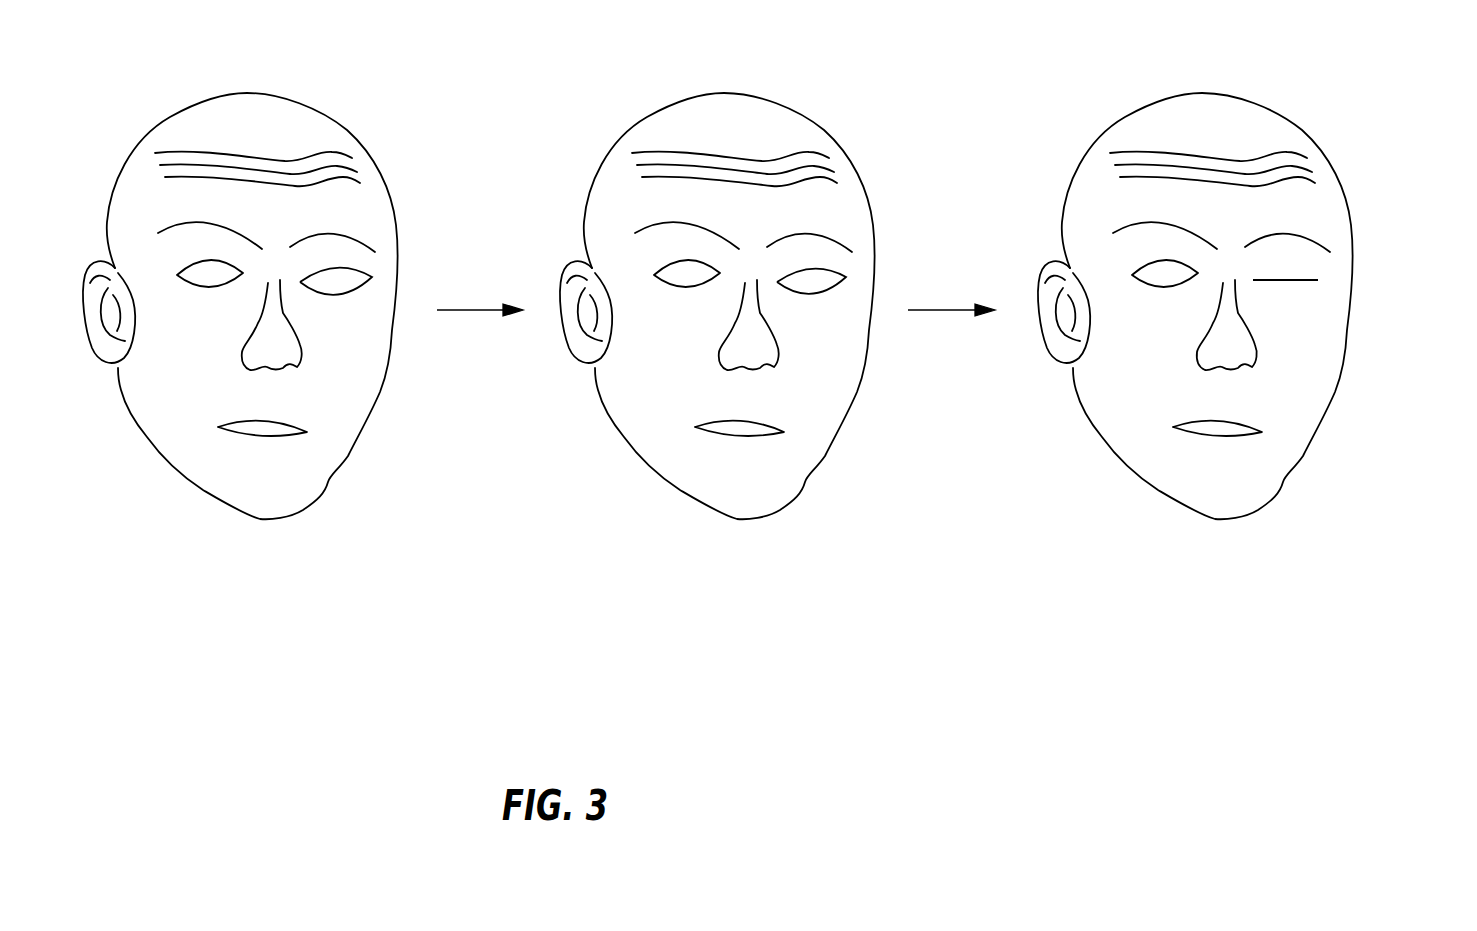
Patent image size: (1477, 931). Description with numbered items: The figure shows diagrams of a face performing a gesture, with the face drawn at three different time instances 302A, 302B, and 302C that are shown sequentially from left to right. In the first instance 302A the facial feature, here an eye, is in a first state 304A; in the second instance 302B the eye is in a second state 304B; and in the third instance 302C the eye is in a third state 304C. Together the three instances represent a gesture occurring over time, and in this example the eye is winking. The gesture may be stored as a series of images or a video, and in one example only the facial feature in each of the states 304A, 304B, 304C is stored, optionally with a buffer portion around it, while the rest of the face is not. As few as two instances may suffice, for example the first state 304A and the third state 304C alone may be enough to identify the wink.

The first time instance 302A is at (207, 97).
The second time instance 302B is at (668, 103).
The third time instance 302C is at (1137, 105).
The first state 304A is at (363, 283).
The second state 304B is at (842, 280).
The third state 304C is at (1318, 280).